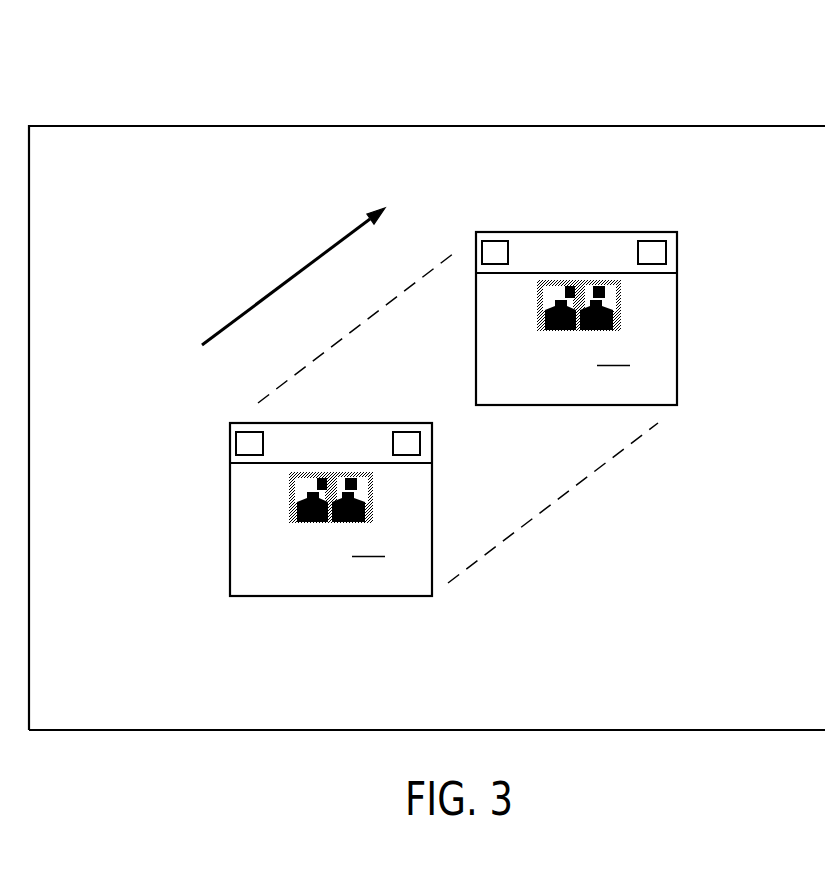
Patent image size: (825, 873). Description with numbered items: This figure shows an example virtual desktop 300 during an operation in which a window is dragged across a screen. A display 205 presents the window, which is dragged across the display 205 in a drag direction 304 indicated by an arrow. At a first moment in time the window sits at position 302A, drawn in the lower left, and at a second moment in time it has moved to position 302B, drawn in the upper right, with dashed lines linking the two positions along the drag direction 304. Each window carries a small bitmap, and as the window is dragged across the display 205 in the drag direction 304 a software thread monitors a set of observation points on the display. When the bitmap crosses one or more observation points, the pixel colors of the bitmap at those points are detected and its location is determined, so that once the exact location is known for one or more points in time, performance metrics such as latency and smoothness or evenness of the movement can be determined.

The virtual desktop 300 is at (503, 79).
The display 205 is at (158, 718).
The position 302A is at (286, 552).
The position 302B is at (629, 281).
The drag direction 304 is at (246, 303).